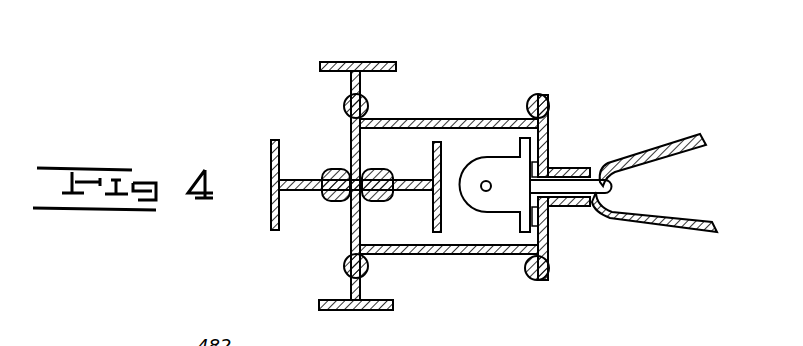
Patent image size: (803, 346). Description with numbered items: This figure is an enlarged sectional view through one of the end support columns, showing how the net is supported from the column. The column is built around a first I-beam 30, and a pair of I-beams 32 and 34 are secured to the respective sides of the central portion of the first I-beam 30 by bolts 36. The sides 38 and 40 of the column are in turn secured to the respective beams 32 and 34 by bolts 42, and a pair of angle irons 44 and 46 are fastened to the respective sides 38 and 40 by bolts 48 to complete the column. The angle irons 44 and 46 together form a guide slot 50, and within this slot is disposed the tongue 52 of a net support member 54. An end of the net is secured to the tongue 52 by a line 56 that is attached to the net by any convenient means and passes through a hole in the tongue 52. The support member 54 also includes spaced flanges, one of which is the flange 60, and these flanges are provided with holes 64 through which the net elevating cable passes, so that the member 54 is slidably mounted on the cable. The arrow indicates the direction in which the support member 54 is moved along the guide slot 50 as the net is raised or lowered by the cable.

The first I-beam 30 is at (270, 216).
The I-beam 32 is at (378, 62).
The I-beam 34 is at (353, 310).
The bolts 36 is at (378, 171).
The side 38 is at (456, 119).
The side 40 is at (462, 255).
The bolts 42 is at (368, 110).
The angle iron 44 is at (548, 160).
The angle iron 46 is at (548, 240).
The bolts 48 is at (551, 104).
The guide slot 50 is at (600, 170).
The tongue 52 is at (614, 187).
The net support member 54 is at (506, 218).
The line 56 is at (707, 222).
The flange 60 is at (500, 166).
The holes 64 is at (483, 191).